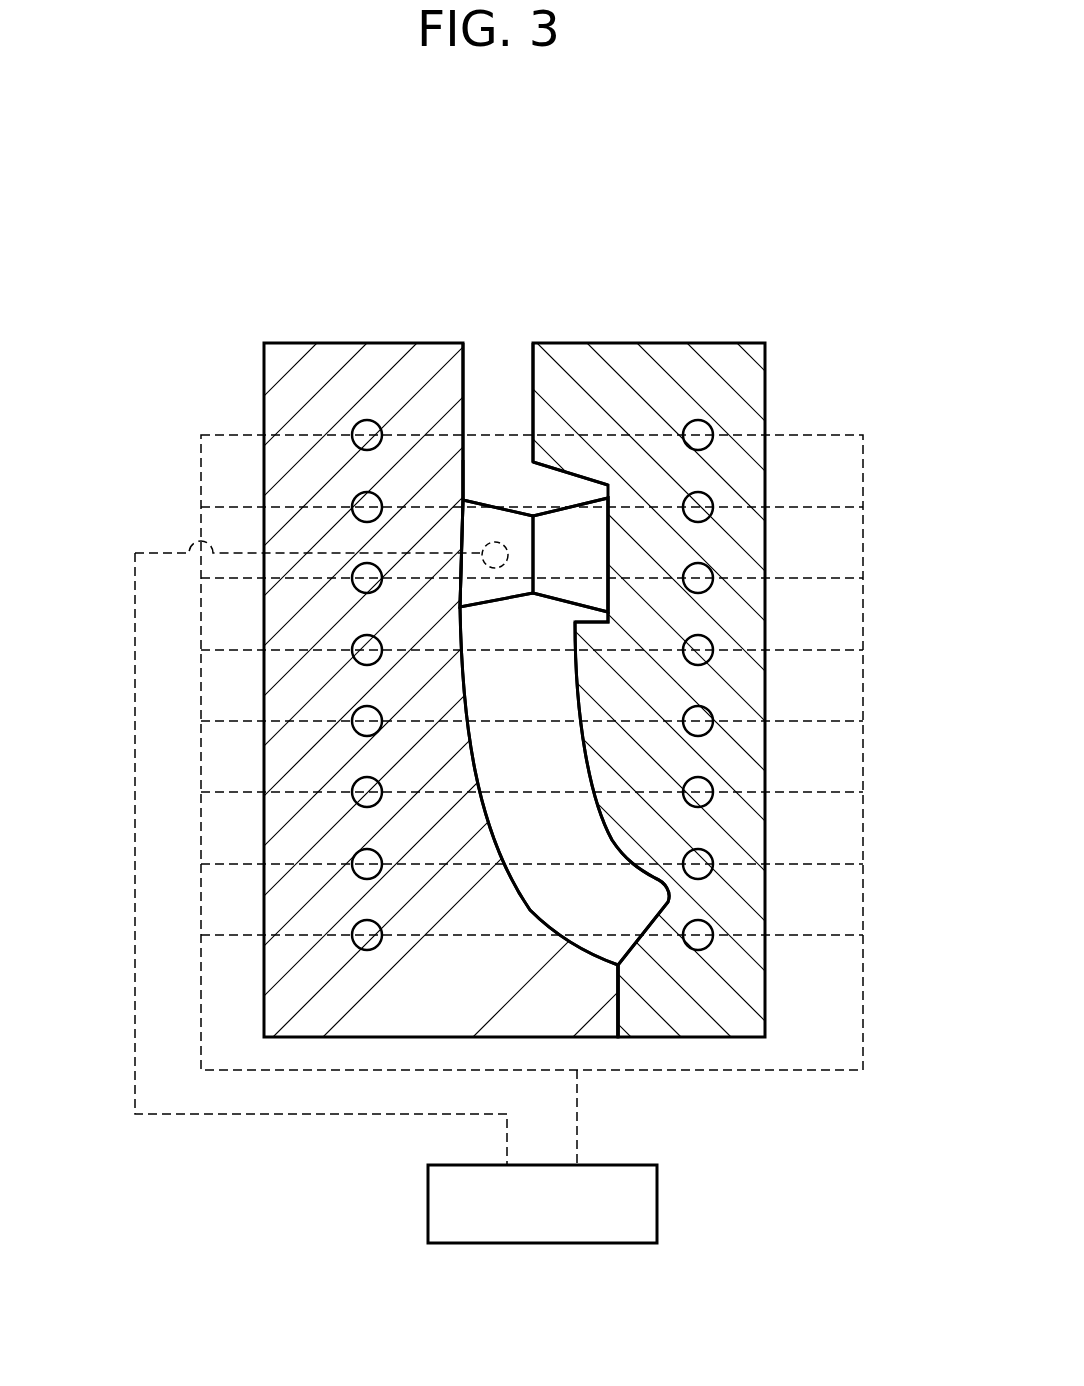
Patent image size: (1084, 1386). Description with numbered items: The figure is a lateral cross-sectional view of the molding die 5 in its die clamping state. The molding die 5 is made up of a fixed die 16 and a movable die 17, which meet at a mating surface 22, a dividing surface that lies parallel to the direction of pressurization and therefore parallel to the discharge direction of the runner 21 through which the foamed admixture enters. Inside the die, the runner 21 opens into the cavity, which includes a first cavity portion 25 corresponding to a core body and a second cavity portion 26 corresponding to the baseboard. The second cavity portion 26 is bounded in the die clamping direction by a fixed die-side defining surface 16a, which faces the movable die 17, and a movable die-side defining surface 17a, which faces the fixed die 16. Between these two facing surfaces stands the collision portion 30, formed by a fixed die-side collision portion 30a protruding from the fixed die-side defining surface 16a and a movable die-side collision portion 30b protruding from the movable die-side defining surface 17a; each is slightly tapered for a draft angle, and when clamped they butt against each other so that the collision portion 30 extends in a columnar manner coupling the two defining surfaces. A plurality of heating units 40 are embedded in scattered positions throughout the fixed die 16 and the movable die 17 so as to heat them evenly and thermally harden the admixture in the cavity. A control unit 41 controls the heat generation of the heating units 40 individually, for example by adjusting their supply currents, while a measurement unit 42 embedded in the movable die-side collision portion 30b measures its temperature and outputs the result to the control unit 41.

The molding die 5 is at (338, 210).
The fixed die 16 is at (623, 357).
The fixed die-side defining surface 16a is at (608, 527).
The movable die 17 is at (350, 360).
The movable die-side defining surface 17a is at (465, 498).
The runner 21 is at (530, 378).
The mating surface 22 is at (613, 1020).
The first cavity portion 25 is at (615, 912).
The second cavity portion 26 is at (577, 612).
The collision portion 30 is at (530, 603).
The fixed die-side collision portion 30a is at (562, 577).
The movable die-side collision portion 30b is at (493, 612).
The heating unit 40 is at (367, 435).
The control unit 41 is at (428, 1205).
The measurement unit 42 is at (508, 555).